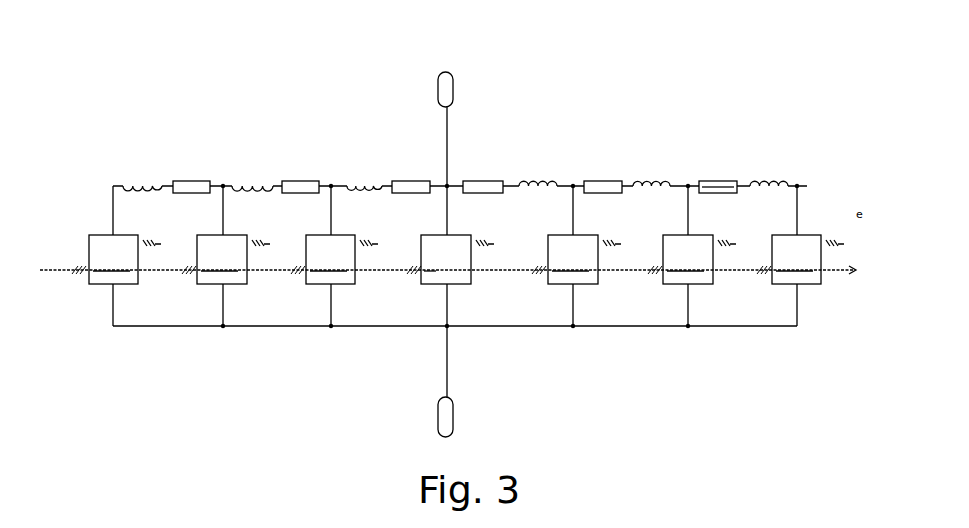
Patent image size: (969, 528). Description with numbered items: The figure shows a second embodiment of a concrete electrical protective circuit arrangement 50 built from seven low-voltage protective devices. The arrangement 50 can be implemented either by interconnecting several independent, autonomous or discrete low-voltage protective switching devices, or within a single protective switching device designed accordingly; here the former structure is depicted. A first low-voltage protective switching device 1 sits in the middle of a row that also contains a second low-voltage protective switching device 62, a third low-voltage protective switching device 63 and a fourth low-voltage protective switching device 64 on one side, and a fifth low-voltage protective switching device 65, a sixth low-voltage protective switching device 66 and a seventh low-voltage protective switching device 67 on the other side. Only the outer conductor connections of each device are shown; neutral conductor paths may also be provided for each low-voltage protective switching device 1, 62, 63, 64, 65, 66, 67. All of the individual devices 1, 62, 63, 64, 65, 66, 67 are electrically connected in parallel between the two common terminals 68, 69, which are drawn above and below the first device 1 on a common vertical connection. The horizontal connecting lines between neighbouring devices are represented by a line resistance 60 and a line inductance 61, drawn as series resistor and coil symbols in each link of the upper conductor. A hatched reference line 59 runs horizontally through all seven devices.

The first low-voltage protective switching device 1 is at (457, 252).
The electrical protective circuit arrangement 50 is at (598, 58).
The ground line 59 is at (520, 246).
The line resistance 60 is at (742, 154).
The line inductance 61 is at (795, 151).
The second low-voltage protective switching device 62 is at (584, 256).
The third low-voltage protective switching device 63 is at (699, 256).
The fourth low-voltage protective switching device 64 is at (808, 256).
The fifth low-voltage protective switching device 65 is at (342, 256).
The sixth low-voltage protective switching device 66 is at (233, 256).
The seventh low-voltage protective switching device 67 is at (125, 256).
The common terminal 68 is at (445, 87).
The common terminal 69 is at (447, 425).